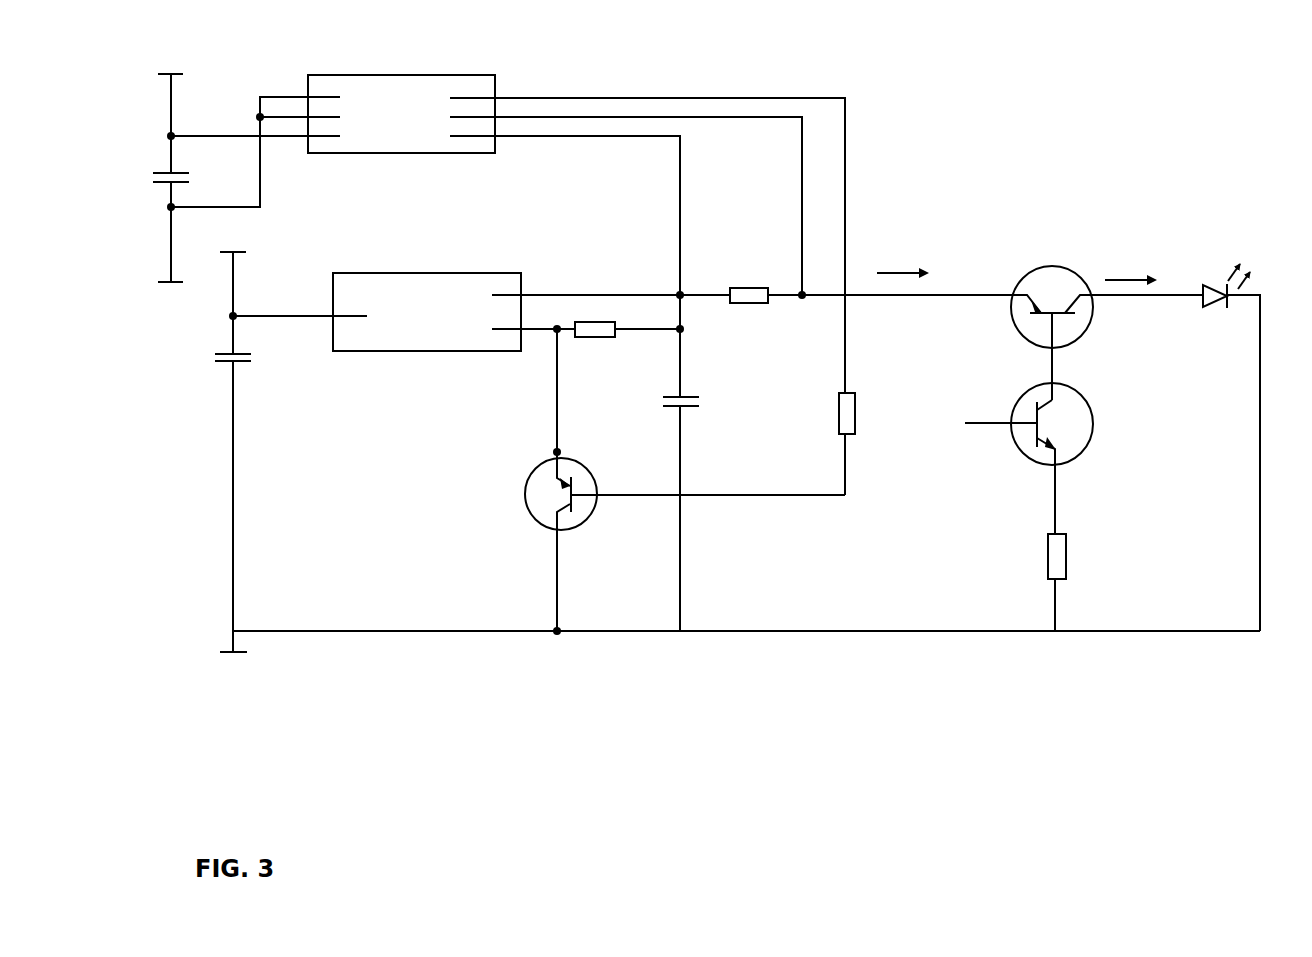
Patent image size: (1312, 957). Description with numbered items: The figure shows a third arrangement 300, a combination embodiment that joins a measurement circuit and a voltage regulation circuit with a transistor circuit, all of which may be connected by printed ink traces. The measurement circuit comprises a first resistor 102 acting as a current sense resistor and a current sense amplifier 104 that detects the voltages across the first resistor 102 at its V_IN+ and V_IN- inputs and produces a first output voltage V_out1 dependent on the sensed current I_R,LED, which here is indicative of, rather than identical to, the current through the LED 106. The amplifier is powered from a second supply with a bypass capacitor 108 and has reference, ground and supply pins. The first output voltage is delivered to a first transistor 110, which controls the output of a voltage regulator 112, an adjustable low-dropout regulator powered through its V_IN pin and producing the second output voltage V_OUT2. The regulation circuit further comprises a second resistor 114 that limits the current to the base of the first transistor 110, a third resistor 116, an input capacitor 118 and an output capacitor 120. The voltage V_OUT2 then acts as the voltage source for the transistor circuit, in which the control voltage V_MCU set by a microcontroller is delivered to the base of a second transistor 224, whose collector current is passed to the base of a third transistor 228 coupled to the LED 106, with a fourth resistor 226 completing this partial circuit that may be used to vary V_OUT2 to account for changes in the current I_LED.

The first resistor 102 is at (734, 329).
The current sense amplifier 104 is at (401, 149).
The LED 106 is at (1210, 260).
The bypass capacitor 108 is at (148, 204).
The first transistor 110 is at (685, 544).
The voltage regulator 112 is at (427, 347).
The second resistor 114 is at (815, 440).
The third resistor 116 is at (614, 356).
The input capacitor 118 is at (263, 382).
The output capacitor 120 is at (707, 435).
The second transistor 224 is at (1034, 458).
The fourth resistor 226 is at (1073, 582).
The third transistor 228 is at (1107, 333).
The third arrangement 300 is at (231, 789).